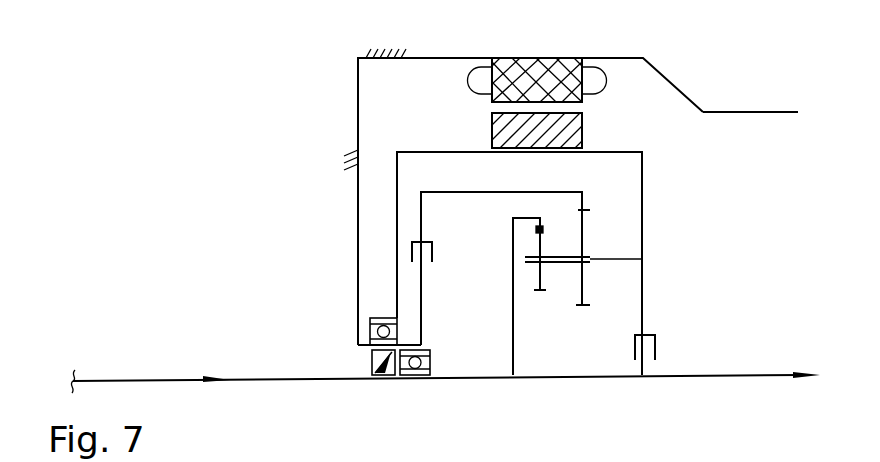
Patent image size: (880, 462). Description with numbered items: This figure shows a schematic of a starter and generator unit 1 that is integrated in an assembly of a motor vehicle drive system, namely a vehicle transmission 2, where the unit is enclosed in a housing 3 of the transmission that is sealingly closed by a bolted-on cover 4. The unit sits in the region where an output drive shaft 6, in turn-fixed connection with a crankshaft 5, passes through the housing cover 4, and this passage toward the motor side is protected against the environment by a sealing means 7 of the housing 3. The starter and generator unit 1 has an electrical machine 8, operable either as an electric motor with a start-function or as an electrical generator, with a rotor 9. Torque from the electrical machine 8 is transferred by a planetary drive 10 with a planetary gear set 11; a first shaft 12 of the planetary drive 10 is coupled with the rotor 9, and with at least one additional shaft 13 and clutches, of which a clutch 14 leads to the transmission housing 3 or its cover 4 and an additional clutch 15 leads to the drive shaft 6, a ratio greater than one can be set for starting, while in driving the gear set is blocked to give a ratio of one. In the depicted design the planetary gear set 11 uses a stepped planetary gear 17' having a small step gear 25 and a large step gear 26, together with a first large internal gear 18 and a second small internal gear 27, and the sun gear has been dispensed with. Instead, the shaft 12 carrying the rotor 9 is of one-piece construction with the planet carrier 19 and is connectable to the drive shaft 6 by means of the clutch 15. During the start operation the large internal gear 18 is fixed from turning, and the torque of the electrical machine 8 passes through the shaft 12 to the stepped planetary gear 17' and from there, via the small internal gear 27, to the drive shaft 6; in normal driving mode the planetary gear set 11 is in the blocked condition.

The starter and generator unit 1 is at (600, 143).
The vehicle transmission 2 is at (754, 351).
The housing 3 is at (723, 112).
The cover 4 is at (358, 116).
The crankshaft 5 is at (130, 378).
The drive shaft 6 is at (490, 378).
The sealing means 7 is at (386, 378).
The electrical machine 8 is at (520, 70).
The rotor 9 is at (492, 120).
The planetary drive 10 is at (412, 206).
The planetary gear set 11 is at (594, 199).
The first shaft 12 is at (644, 163).
The additional shaft 13 is at (515, 192).
The clutch 14 is at (432, 253).
The additional clutch 15 is at (657, 345).
The stepped planetary gear 17' is at (558, 230).
The first large internal gear 18 is at (575, 203).
The planet carrier 19 is at (608, 263).
The small step gear 25 is at (543, 292).
The large step gear 26 is at (584, 210).
The second small internal gear 27 is at (515, 318).